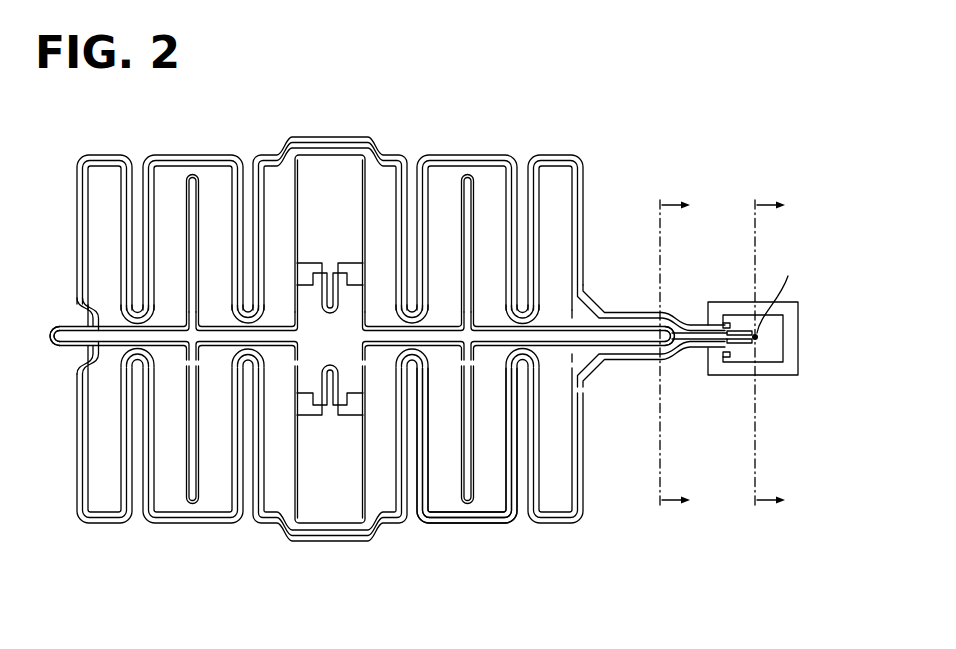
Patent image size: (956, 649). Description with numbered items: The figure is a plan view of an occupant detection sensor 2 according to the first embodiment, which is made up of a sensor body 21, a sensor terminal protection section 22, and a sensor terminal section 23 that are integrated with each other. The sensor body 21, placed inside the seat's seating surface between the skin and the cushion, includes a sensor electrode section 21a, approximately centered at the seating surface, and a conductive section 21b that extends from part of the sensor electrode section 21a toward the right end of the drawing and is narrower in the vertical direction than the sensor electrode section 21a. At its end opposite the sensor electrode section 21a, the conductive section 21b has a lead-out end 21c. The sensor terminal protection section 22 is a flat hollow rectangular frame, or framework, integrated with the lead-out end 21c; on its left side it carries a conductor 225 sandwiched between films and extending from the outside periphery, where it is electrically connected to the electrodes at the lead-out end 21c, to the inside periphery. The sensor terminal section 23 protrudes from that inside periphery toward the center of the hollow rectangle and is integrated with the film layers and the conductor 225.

The occupant detection sensor 2 is at (684, 139).
The sensor body 21 is at (350, 550).
The sensor electrode section 21a is at (462, 527).
The conductive section 21b is at (623, 362).
The lead-out end 21c is at (716, 323).
The sensor terminal protection section 22 is at (780, 376).
The sensor terminal section 23 is at (730, 362).
The conductor 225 is at (718, 347).